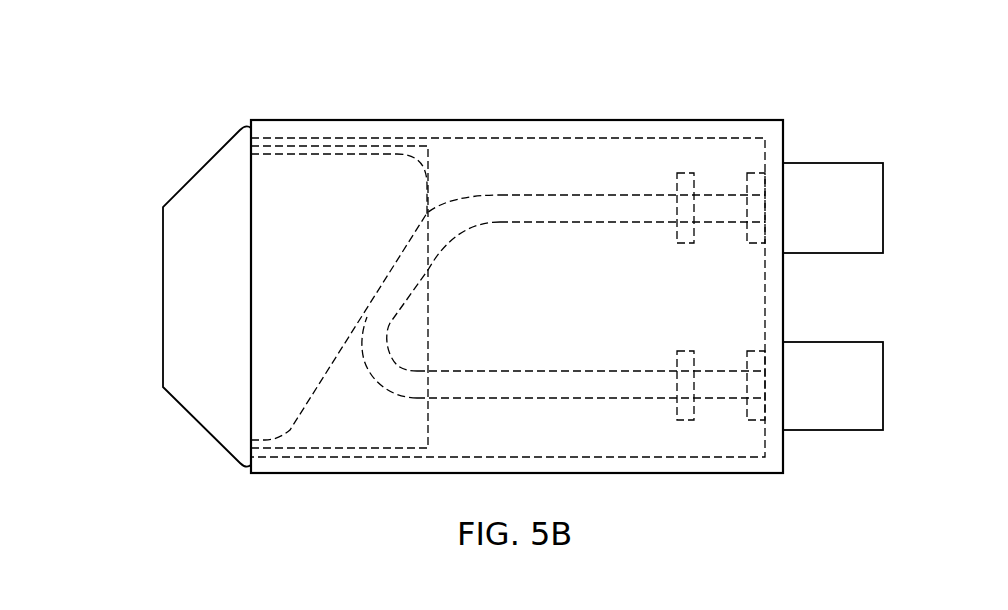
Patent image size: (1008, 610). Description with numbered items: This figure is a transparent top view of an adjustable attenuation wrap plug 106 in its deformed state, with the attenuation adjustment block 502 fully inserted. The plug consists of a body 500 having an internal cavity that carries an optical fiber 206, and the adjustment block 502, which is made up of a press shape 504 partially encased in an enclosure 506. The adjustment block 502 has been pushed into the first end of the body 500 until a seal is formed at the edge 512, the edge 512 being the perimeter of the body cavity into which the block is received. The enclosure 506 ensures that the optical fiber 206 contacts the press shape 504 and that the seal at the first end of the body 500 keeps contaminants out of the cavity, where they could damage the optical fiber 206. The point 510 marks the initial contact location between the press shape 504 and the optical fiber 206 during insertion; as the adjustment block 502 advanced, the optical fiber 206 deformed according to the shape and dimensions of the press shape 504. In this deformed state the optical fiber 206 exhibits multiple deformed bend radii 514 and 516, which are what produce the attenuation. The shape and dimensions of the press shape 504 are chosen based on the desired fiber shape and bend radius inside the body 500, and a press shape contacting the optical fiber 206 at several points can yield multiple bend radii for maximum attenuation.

The adjustable attenuation wrap plug 106 is at (192, 96).
The body 500 is at (704, 118).
The adjustment block 502 is at (231, 312).
The edge 512 is at (251, 227).
The enclosure 506 is at (335, 457).
The press shape 504 is at (277, 387).
The point 510 is at (403, 263).
The optical fiber 206 is at (522, 195).
The deformed bend radius 514 is at (472, 212).
The deformed bend radius 516 is at (397, 373).